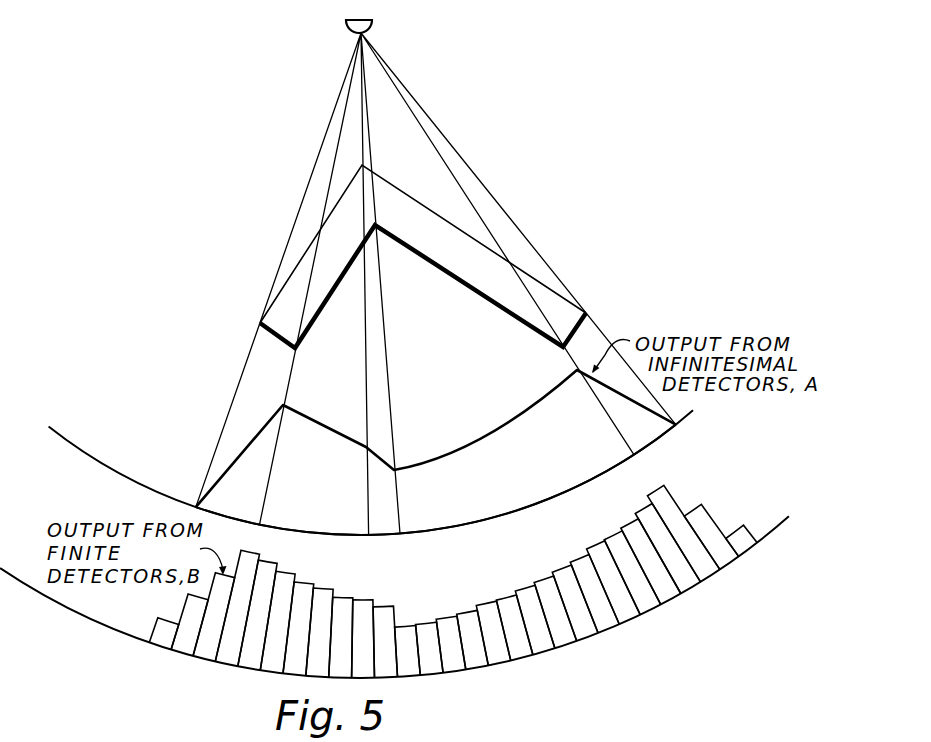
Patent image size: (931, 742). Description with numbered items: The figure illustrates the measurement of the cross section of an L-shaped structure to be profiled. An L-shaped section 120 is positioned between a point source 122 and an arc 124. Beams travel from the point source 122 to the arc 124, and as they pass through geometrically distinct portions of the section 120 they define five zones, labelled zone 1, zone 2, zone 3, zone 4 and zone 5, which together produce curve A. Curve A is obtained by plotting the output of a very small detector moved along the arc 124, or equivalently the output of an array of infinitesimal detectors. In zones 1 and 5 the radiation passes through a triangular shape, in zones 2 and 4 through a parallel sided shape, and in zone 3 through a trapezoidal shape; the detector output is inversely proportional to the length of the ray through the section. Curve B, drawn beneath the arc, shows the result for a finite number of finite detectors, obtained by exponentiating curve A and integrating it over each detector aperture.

The L-shaped section 120 is at (500, 278).
The point source 122 is at (372, 26).
The arc 124 is at (67, 440).
The zone 1 is at (228, 504).
The zone 2 is at (314, 513).
The zone 3 is at (384, 513).
The zone 4 is at (517, 494).
The zone 5 is at (651, 436).